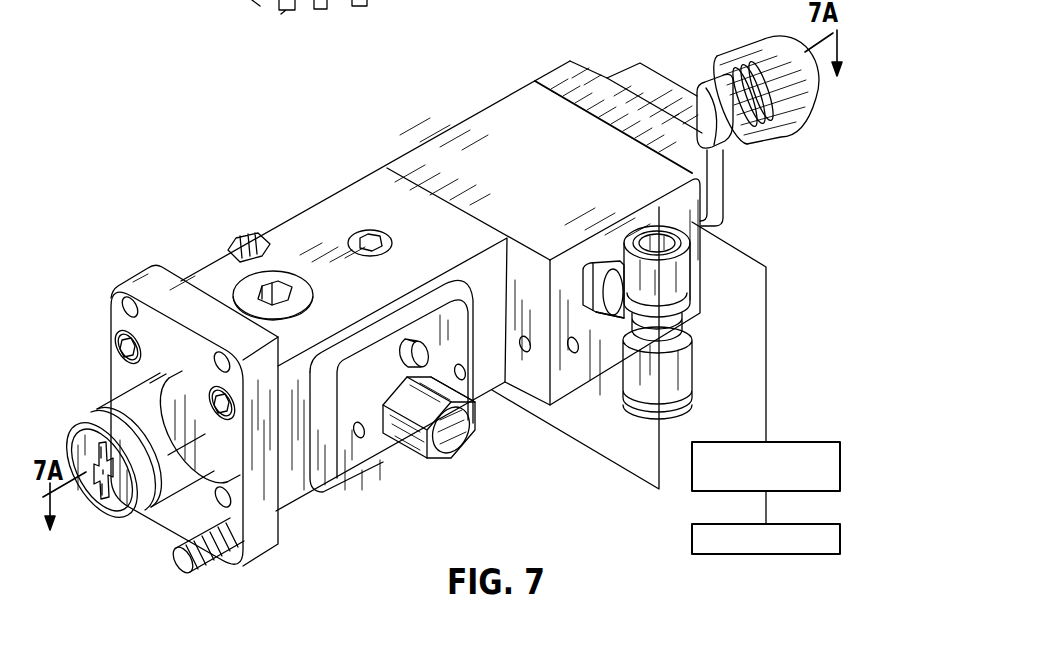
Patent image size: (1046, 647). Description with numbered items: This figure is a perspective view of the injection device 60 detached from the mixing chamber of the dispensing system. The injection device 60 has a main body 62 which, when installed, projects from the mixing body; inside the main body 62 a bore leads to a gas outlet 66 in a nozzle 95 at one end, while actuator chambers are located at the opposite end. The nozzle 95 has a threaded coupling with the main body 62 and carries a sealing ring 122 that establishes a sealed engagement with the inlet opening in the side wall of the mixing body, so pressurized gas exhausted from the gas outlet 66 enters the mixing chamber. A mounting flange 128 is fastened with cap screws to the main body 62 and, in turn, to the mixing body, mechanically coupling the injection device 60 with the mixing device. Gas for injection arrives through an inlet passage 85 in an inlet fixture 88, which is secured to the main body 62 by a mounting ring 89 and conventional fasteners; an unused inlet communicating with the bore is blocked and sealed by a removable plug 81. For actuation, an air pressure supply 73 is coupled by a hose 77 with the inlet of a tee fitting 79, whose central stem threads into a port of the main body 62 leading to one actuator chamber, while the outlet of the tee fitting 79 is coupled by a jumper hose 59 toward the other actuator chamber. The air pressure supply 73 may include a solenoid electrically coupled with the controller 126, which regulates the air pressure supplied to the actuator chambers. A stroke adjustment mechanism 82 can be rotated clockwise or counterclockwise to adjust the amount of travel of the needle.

The injection device 60 is at (567, 32).
The main body 62 is at (430, 150).
The mounting flange 128 is at (176, 274).
The sealing ring 122 is at (90, 427).
The gas outlet 66 is at (97, 500).
The nozzle 95 is at (127, 500).
The removable plug 81 is at (283, 272).
The mounting ring 89 is at (320, 494).
The inlet fixture 88 is at (404, 433).
The inlet passage 85 is at (454, 428).
The stroke adjustment mechanism 82 is at (703, 97).
The hose 77 is at (752, 262).
The tee fitting 79 is at (694, 345).
The jumper hose 59 is at (626, 472).
The air pressure supply 73 is at (797, 442).
The controller 126 is at (725, 555).